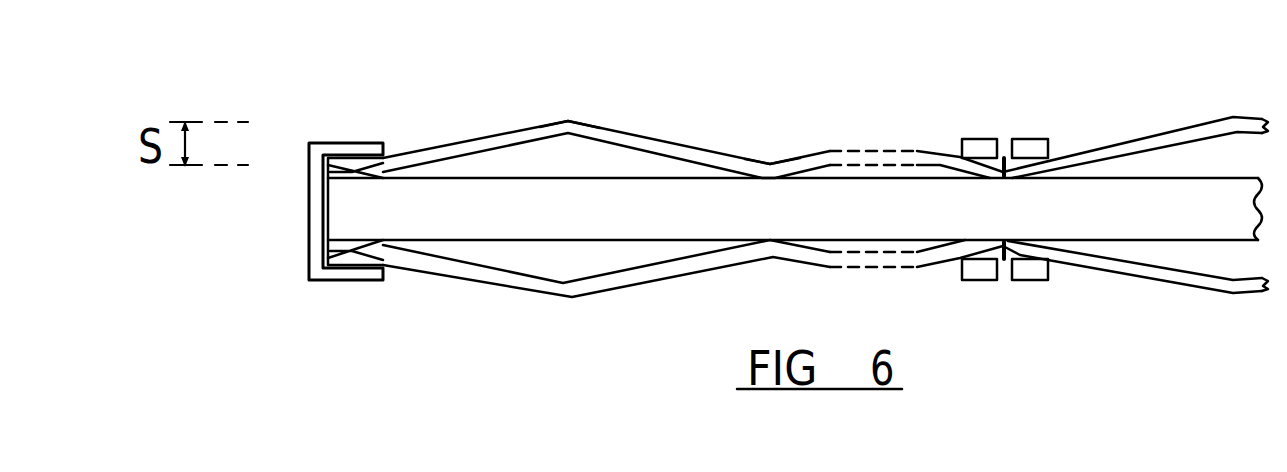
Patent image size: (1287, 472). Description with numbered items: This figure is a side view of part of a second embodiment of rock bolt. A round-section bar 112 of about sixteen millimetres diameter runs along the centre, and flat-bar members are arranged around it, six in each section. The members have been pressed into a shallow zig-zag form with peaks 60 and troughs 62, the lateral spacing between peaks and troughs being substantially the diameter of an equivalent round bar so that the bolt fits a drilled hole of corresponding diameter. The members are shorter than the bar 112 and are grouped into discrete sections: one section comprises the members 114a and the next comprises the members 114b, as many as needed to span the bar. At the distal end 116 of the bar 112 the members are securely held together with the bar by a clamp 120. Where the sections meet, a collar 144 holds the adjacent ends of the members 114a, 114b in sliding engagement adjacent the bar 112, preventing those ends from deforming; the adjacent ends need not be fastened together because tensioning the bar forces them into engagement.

The peaks 60 is at (560, 121).
The troughs 62 is at (773, 163).
The bar 112 is at (727, 214).
The members of first section 114a is at (638, 135).
The members of next section 114b is at (1140, 138).
The distal end of the bar 116 is at (296, 263).
The clamp 120 is at (340, 143).
The collar 144 is at (1026, 139).